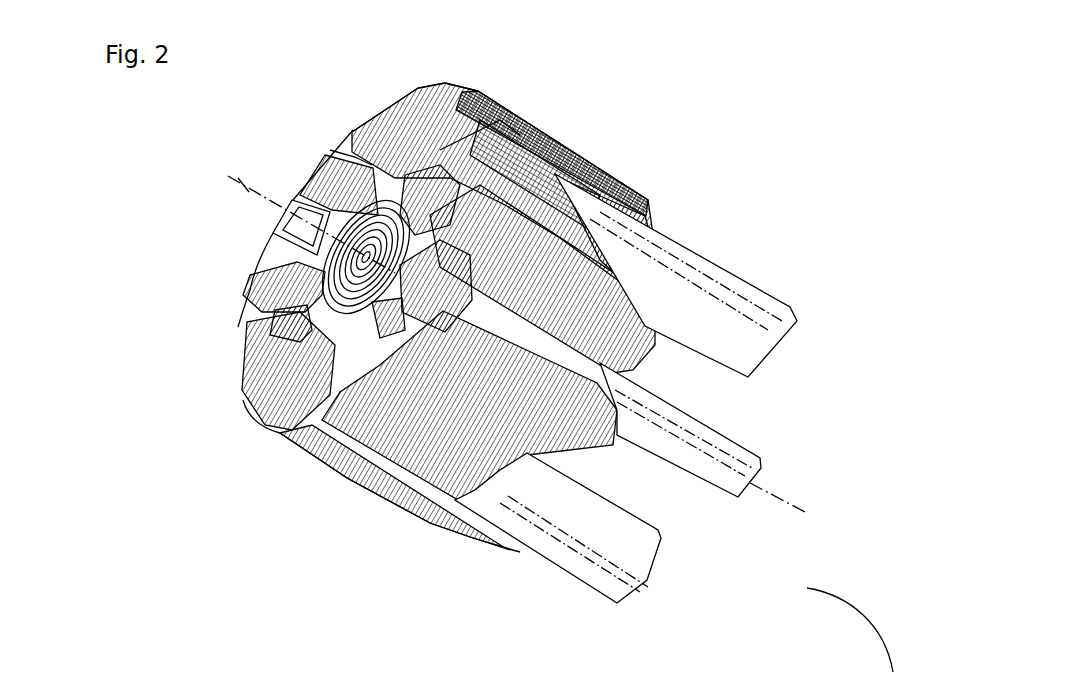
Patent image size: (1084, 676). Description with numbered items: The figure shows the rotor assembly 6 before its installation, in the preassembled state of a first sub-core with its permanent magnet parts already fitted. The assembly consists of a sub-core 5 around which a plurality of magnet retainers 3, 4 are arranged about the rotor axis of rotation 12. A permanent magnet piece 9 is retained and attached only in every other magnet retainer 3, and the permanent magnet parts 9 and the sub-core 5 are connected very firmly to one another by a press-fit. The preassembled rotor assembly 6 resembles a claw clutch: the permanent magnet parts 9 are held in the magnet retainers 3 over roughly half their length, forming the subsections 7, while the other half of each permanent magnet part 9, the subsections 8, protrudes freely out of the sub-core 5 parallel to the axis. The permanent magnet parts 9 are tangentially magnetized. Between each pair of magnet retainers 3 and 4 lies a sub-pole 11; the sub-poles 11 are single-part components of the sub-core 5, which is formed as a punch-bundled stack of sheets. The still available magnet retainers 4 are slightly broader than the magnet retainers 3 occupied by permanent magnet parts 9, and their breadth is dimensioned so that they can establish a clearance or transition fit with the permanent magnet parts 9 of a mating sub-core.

The magnet retainer 3 is at (403, 94).
The available magnet retainer 4 is at (355, 157).
The sub-core 5 is at (590, 155).
The rotor assembly 6 is at (290, 510).
The subsection 7 is at (540, 158).
The subsection 8 is at (758, 303).
The permanent magnet part 9 is at (737, 270).
The sub-pole 11 is at (594, 221).
The rotor axis of rotation 12 is at (244, 186).